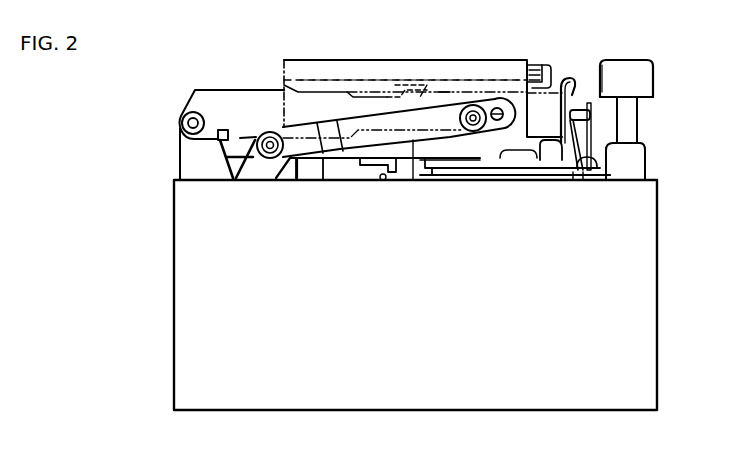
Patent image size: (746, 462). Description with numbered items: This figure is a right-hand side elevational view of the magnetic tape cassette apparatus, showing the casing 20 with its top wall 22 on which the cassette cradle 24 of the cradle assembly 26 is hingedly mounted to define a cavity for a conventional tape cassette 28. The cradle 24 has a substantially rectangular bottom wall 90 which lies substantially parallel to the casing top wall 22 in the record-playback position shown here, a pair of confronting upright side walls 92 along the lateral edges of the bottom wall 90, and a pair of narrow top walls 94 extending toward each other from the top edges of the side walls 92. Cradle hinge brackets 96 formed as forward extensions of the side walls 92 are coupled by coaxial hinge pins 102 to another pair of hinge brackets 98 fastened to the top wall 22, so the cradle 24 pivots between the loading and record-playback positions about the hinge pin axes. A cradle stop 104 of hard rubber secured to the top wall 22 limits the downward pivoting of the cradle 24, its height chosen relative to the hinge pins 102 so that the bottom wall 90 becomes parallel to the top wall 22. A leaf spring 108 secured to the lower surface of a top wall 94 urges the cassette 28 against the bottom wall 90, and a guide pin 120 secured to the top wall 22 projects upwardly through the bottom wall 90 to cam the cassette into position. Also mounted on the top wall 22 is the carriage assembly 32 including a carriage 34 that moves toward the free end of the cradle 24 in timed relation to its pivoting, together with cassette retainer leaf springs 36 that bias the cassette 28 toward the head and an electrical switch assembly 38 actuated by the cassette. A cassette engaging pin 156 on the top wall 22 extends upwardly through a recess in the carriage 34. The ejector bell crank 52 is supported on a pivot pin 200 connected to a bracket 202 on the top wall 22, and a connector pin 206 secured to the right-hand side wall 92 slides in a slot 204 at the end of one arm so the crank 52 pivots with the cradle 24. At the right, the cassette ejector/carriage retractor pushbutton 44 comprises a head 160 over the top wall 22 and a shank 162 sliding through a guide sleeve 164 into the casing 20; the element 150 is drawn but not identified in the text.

The casing 20 is at (663, 220).
The top wall 22 is at (383, 180).
The cassette cradle 24 is at (319, 60).
The cradle assembly 26 is at (201, 88).
The tape cassette 28 is at (284, 107).
The carriage assembly 32 is at (597, 150).
The carriage 34 is at (546, 176).
The cassette retainer leaf springs 36 is at (573, 80).
The electrical switch assembly 38 is at (590, 100).
The cassette ejector/carriage retractor pushbutton 44 is at (655, 62).
The ejector bell crank 52 is at (413, 180).
The bottom wall 90 is at (351, 150).
The side walls 92 is at (346, 85).
The top walls 94 is at (478, 80).
The cradle hinge brackets 96 is at (232, 96).
The hinge brackets 98 is at (190, 157).
The hinge pins 102 is at (183, 124).
The cradle stop 104 is at (512, 170).
The leaf springs 108 is at (398, 86).
The guide pin 120 is at (311, 172).
The knob flange 150 is at (645, 100).
The cassette engaging pin 156 is at (562, 85).
The head 160 is at (618, 70).
The shank 162 is at (632, 116).
The guide sleeve 164 is at (637, 165).
The pivot pin 200 is at (268, 158).
The bracket 202 is at (283, 178).
The slot 204 is at (492, 99).
The connector pin 206 is at (465, 106).